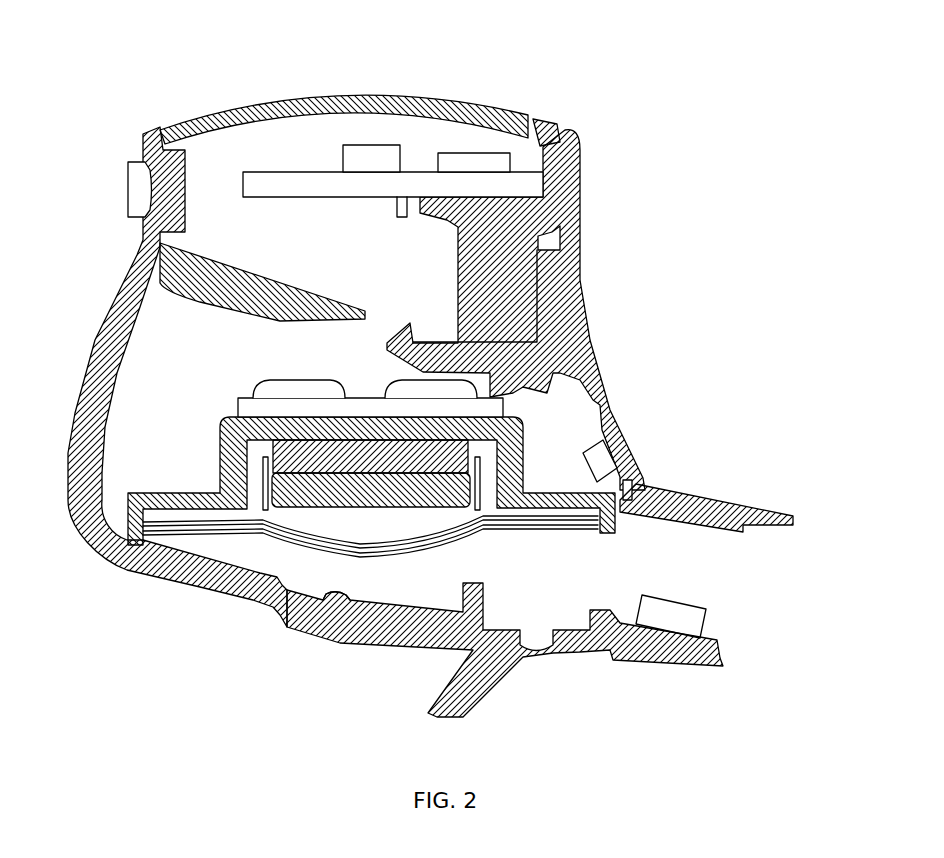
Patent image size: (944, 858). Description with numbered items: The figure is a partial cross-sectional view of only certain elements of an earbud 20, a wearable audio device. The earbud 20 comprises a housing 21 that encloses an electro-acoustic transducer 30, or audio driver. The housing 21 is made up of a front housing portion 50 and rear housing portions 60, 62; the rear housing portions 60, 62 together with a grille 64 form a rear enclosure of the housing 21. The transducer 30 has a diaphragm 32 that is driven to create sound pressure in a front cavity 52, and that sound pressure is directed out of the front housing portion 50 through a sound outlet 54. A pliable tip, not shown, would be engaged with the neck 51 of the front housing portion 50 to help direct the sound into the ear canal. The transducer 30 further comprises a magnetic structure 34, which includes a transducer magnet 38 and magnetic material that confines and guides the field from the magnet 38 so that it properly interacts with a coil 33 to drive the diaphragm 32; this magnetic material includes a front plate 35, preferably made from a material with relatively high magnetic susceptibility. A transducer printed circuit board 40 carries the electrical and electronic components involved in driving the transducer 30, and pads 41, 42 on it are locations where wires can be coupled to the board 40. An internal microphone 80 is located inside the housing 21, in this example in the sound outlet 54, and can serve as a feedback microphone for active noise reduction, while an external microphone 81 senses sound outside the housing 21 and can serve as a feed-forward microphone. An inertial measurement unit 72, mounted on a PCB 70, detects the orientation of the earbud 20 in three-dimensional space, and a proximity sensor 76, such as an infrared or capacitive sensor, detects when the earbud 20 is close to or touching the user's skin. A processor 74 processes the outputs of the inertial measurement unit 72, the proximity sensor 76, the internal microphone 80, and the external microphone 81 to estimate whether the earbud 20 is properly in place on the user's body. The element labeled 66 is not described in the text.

The earbud 20 is at (448, 374).
The housing 21 is at (642, 430).
The electro-acoustic transducer 30 is at (371, 463).
The diaphragm 32 is at (557, 529).
The coil 33 is at (483, 516).
The magnetic structure 34 is at (195, 466).
The front plate 35 is at (410, 507).
The transducer magnet 38 is at (355, 457).
The transducer printed circuit board 40 is at (233, 414).
The pad 41 is at (285, 388).
The pad 42 is at (390, 388).
The front housing portion 50 is at (410, 647).
The neck 51 is at (712, 492).
The front cavity 52 is at (305, 592).
The sound outlet 54 is at (553, 650).
The rear housing portion 60 is at (378, 377).
The rear housing portion 62 is at (573, 197).
The grille 64 is at (372, 92).
The rib 66 is at (162, 313).
The PCB 70 is at (345, 190).
The inertial measurement unit 72 is at (346, 146).
The processor 74 is at (480, 155).
The proximity sensor 76 is at (592, 460).
The internal microphone 80 is at (672, 615).
The external microphone 81 is at (133, 182).